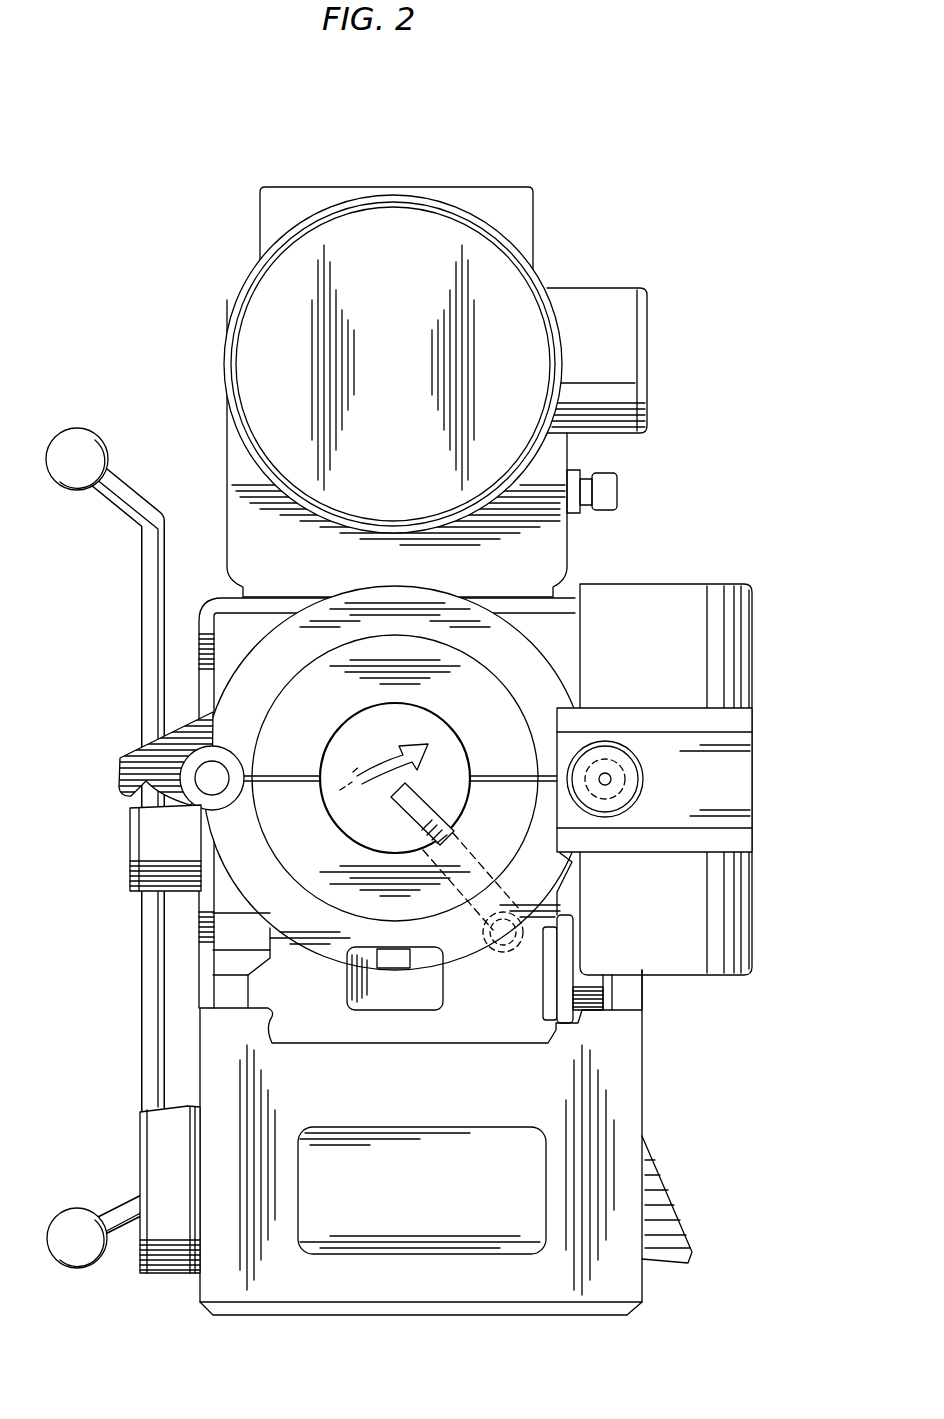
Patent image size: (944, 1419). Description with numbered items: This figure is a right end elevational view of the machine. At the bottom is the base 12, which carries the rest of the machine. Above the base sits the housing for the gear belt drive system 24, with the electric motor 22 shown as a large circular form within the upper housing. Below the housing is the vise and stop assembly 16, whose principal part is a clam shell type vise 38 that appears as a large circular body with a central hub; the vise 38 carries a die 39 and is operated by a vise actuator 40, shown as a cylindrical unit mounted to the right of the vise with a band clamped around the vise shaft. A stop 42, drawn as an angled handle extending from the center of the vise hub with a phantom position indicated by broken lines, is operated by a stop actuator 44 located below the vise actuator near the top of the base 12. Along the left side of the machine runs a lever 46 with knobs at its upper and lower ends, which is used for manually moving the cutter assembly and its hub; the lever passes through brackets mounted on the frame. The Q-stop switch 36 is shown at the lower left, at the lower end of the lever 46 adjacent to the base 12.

The base 12 is at (642, 1075).
The vise and stop assembly 16 is at (225, 681).
The electric motor 22 is at (393, 364).
The housing for the gear belt drive system 24 is at (533, 192).
The Q-stop switch 36 is at (140, 1272).
The clam shell type vise 38 is at (510, 642).
The die 39 is at (222, 837).
The vise actuator 40 is at (654, 779).
The stop 42 is at (397, 808).
The stop actuator 44 is at (582, 990).
The lever 46 is at (147, 607).